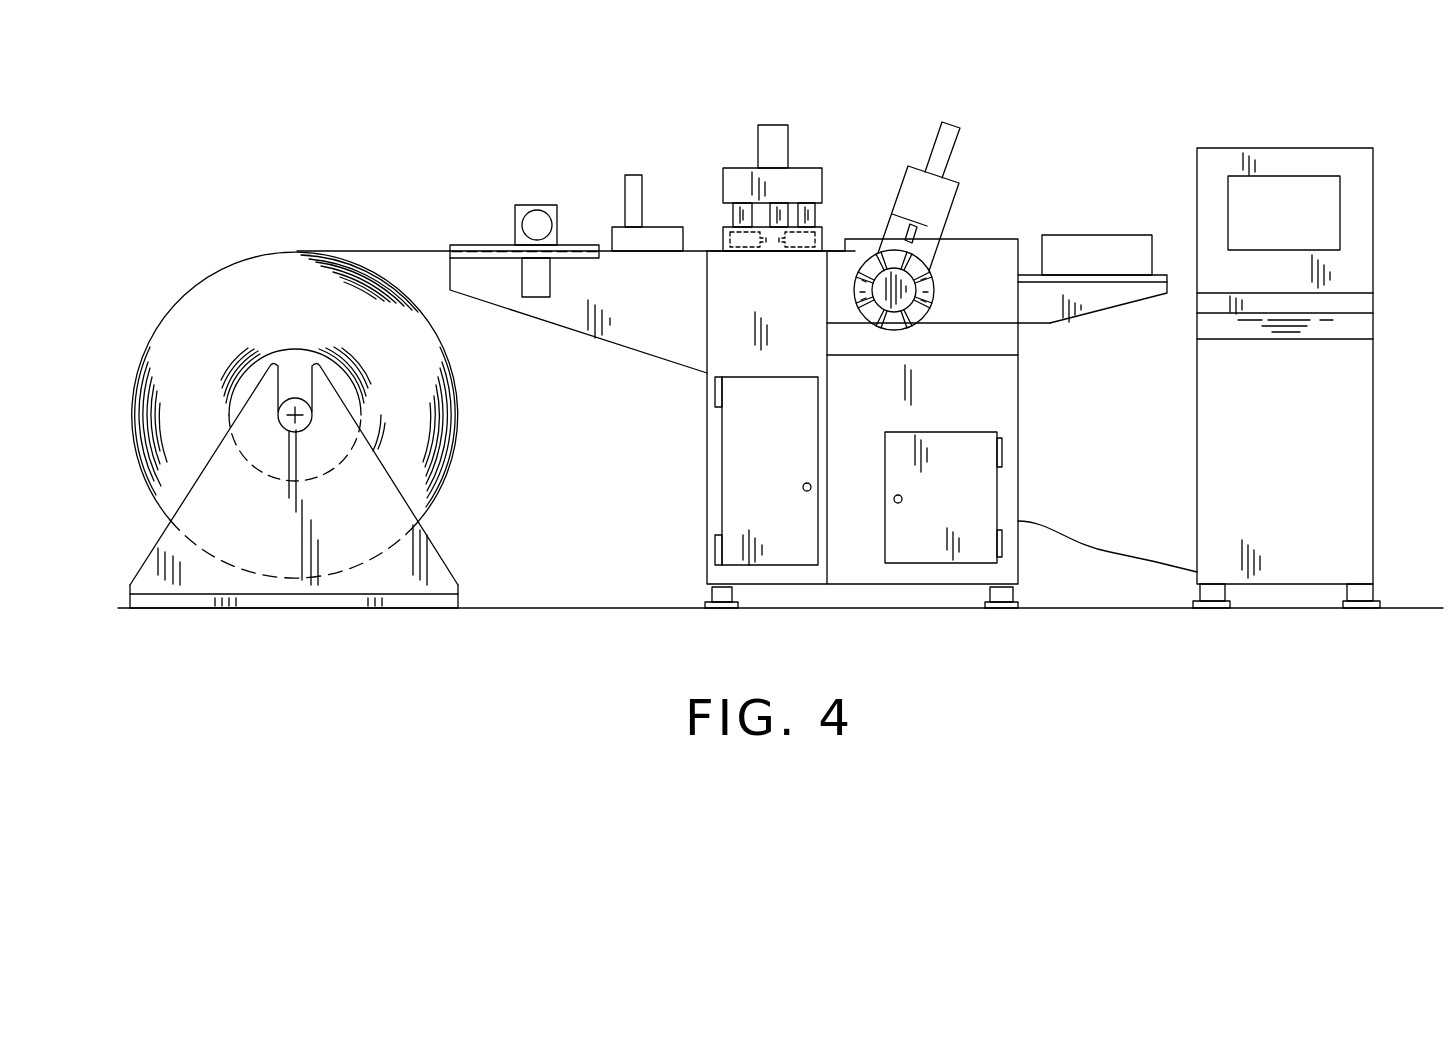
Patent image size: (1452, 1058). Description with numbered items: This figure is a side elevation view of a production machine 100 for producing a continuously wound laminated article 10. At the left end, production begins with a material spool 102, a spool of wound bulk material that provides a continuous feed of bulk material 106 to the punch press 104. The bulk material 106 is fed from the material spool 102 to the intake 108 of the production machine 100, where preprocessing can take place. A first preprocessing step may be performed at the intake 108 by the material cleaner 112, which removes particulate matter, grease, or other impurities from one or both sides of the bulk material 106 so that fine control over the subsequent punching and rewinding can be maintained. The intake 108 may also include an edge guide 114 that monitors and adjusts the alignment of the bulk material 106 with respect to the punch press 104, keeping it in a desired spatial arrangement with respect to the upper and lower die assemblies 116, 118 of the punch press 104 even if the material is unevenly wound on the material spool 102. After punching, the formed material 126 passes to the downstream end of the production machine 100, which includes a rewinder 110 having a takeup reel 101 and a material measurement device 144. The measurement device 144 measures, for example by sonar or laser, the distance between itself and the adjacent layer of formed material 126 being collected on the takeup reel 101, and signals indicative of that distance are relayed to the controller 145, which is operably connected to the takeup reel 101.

The production machine 100 is at (648, 88).
The material spool 102 is at (210, 255).
The punch press 104 is at (806, 155).
The bulk material 106 is at (397, 250).
The intake 108 is at (528, 185).
The rewinder 110 is at (951, 335).
The material cleaner 112 is at (512, 237).
The edge guide 114 is at (640, 196).
The upper die assembly 116 is at (810, 177).
The lower die assembly 118 is at (795, 265).
The formed material 126 is at (835, 268).
The material measurement device 144 is at (922, 182).
The wound laminated article 10 is at (935, 285).
The takeup reel 101 is at (885, 302).
The controller 145 is at (1285, 140).